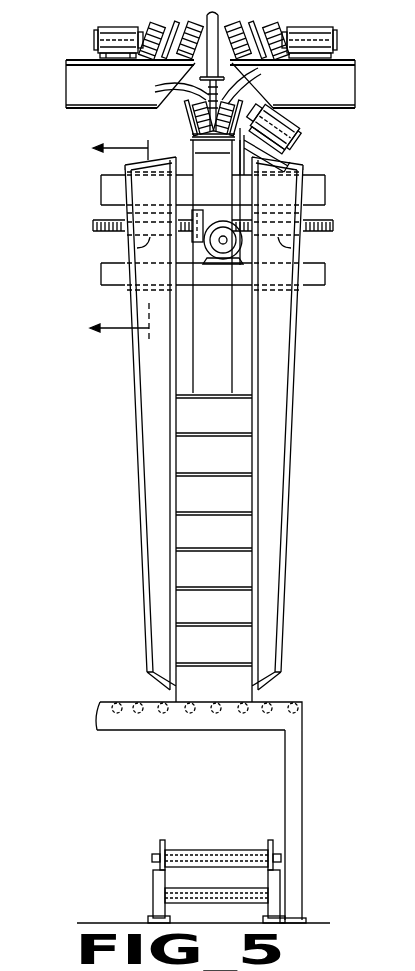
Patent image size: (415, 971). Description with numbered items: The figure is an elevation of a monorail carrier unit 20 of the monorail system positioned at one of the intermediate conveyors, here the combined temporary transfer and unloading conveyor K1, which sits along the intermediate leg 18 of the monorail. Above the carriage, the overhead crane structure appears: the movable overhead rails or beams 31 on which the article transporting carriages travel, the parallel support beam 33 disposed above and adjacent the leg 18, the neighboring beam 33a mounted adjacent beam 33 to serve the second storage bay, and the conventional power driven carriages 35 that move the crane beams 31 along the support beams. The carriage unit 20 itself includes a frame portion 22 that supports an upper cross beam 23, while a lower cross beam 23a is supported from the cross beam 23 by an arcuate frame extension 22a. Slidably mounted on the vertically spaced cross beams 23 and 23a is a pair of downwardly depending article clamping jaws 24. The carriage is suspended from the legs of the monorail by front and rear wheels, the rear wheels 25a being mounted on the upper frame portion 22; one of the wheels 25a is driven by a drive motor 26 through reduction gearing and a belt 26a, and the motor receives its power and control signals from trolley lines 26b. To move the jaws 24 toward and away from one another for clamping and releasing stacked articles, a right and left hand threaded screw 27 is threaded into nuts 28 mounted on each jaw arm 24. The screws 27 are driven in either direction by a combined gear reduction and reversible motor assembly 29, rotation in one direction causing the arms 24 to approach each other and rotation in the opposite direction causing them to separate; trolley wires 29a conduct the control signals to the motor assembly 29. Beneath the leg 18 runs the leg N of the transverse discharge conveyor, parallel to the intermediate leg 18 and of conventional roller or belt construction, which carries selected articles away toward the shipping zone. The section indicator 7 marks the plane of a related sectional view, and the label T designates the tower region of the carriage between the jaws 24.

The carriage unit 20 is at (135, 502).
The frame portion 22 is at (229, 189).
The arcuate frame extension 22a is at (193, 243).
The upper cross beam 23 is at (108, 181).
The lower cross beam 23a is at (108, 271).
The article clamping jaws 24 is at (272, 529).
The right and left hand threaded screw 27 is at (93, 226).
The nuts 28 is at (137, 246).
The combined gear reduction and reversible motor assembly 29 is at (223, 245).
The tower ladder section T is at (235, 412).
The combined temporary transfer and unloading conveyor K1 is at (121, 701).
The leg of the discharge conveyor N is at (190, 850).
The overhead rails or beams 31 is at (75, 82).
The power driven carriages 35 is at (108, 37).
The parallel beam 33 is at (157, 17).
The beam 33a is at (258, 20).
The intermediate leg 18 is at (205, 76).
The trolley wires 29a is at (156, 90).
The trolley lines 26b is at (257, 72).
The rear wheels 25a is at (228, 131).
The belt 26a is at (250, 115).
The drive motor 26 is at (292, 120).
The section line 7- 7 is at (119, 242).